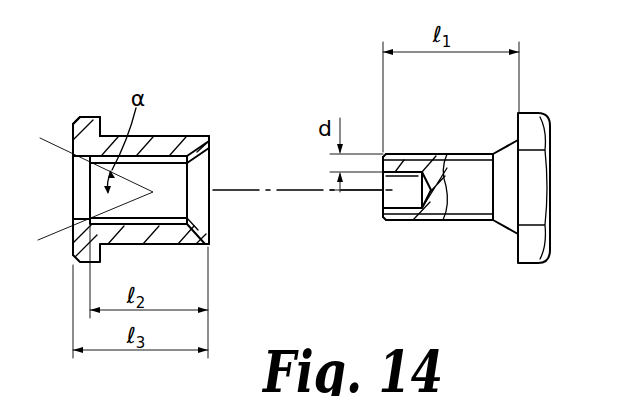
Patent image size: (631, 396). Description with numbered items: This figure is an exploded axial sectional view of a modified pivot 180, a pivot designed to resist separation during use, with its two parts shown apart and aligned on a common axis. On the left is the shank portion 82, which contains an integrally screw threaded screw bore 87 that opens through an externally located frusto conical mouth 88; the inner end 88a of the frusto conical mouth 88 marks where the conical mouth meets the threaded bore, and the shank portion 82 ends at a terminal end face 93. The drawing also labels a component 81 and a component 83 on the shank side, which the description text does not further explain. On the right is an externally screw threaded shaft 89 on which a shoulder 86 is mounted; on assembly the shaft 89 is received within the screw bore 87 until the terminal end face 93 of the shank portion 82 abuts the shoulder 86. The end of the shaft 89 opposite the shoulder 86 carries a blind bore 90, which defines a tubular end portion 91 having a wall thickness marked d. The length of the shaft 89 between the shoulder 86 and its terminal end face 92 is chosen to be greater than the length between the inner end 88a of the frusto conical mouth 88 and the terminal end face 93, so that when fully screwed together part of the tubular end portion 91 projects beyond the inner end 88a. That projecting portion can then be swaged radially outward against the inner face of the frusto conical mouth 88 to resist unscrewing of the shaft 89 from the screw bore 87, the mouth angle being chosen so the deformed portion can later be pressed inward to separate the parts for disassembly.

The bushing 81 is at (200, 252).
The shank portion 82 is at (192, 138).
The flange of bushing 83 is at (82, 121).
The shoulder 86 is at (530, 120).
The screw bore 87 is at (190, 171).
The frusto conical mouth 88 is at (84, 194).
The inner end of the frusto conical mouth 88a is at (86, 214).
The shaft 89 is at (467, 192).
The blind bore 90 is at (411, 200).
The tubular end portion 91 is at (394, 145).
The terminal end face 92 is at (382, 199).
The terminal end face 93 is at (212, 214).
The modified pivot 180 is at (362, 200).